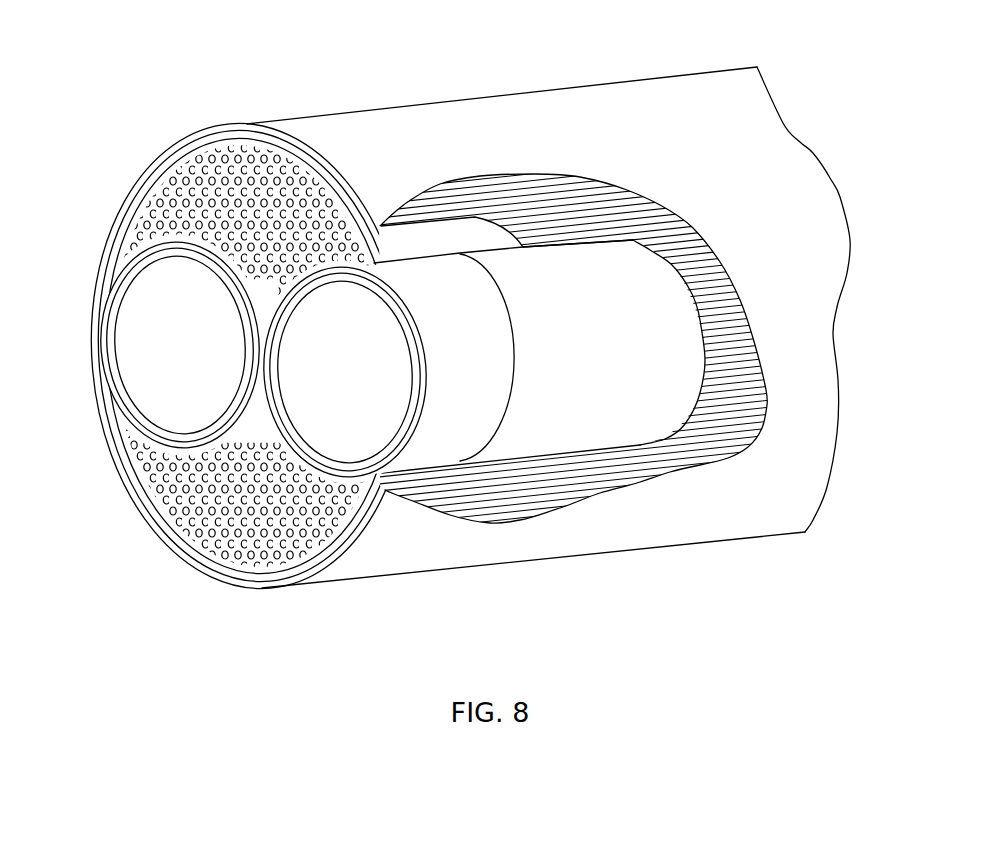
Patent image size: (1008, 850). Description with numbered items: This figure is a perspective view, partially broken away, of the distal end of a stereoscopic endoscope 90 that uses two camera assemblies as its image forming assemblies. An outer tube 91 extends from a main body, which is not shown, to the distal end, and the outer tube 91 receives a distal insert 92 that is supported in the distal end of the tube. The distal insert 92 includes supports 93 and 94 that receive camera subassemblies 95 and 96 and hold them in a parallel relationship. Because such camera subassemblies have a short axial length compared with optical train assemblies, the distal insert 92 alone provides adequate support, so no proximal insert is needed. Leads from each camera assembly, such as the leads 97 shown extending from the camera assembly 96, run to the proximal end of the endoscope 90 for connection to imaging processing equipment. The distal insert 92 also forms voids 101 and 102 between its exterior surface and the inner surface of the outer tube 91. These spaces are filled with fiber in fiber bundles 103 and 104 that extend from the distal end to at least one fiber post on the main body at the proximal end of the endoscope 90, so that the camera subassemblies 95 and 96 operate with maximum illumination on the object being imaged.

The stereoscopic endoscope 90 is at (352, 92).
The outer tube 91 is at (690, 93).
The distal insert 92 is at (508, 428).
The support 93 is at (112, 388).
The support 94 is at (450, 443).
The camera subassembly 95 is at (132, 310).
The camera subassembly 96 is at (350, 405).
The leads 97 is at (722, 316).
The void 101 is at (178, 160).
The void 102 is at (205, 540).
The fiber bundle 103 is at (542, 177).
The fiber bundle 104 is at (302, 535).